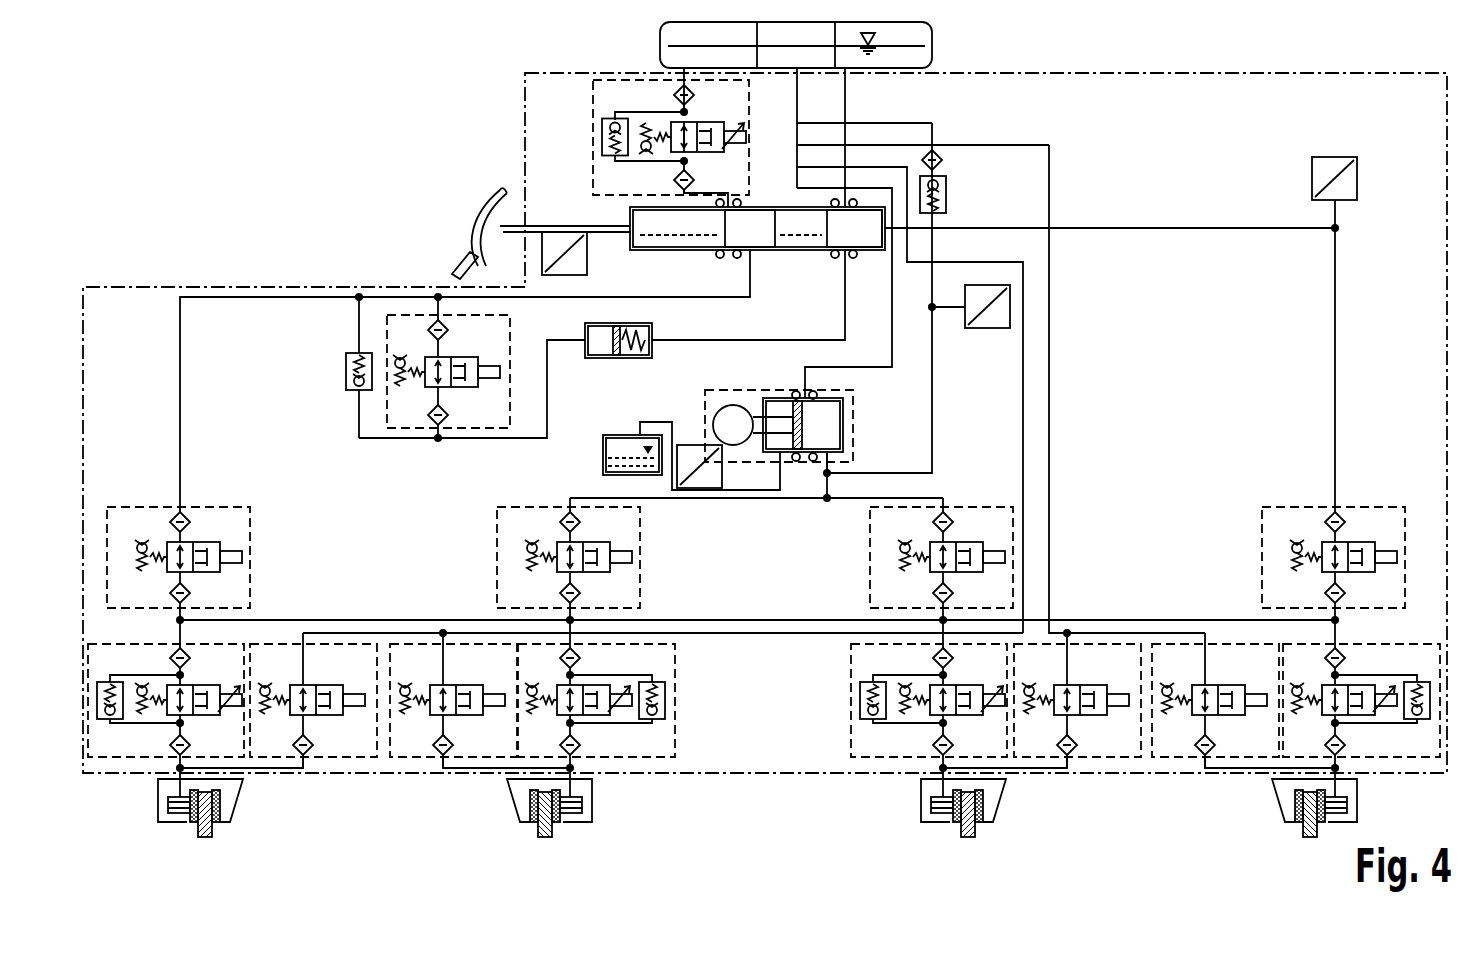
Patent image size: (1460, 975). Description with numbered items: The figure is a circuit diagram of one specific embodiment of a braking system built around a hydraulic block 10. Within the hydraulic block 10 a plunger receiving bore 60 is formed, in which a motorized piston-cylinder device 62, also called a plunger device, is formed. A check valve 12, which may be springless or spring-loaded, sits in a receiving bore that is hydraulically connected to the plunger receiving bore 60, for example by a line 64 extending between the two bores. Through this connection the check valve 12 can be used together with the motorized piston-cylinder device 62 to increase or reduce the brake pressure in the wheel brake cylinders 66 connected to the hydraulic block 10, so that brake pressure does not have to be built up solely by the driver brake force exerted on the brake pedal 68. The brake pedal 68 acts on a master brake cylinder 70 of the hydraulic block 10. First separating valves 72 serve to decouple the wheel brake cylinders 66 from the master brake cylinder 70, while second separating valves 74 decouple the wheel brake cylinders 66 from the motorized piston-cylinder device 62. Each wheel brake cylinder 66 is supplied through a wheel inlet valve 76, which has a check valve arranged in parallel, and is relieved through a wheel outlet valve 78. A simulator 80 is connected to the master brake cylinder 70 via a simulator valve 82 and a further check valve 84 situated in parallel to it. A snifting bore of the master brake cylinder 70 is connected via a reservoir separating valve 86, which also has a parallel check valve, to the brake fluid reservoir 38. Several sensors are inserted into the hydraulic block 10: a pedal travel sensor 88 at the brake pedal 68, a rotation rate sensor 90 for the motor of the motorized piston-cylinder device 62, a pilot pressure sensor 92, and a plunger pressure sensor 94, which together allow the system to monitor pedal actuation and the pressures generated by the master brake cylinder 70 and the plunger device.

The hydraulic block 10 is at (1266, 116).
The check valve 12 is at (946, 190).
The brake fluid reservoir 38 is at (932, 45).
The plunger receiving bore 60 is at (832, 425).
The motorized piston-cylinder device 62 is at (754, 413).
The line 64 is at (824, 472).
The wheel brake cylinder 66 is at (173, 822).
The brake pedal 68 is at (498, 212).
The master brake cylinder 70 is at (618, 212).
The first separating valve 72 is at (258, 558).
The second separating valve 74 is at (493, 558).
The wheel inlet valve 76 is at (122, 760).
The wheel outlet valve 78 is at (343, 760).
The simulator 80 is at (591, 366).
The simulator valve 82 is at (400, 436).
The further check valve 84 is at (345, 371).
The reservoir separating valve 86 is at (586, 123).
The pedal travel sensor 88 is at (587, 257).
The rotation rate sensor 90 is at (722, 478).
The pilot pressure sensor 92 is at (1357, 178).
The plunger pressure sensor 94 is at (988, 330).